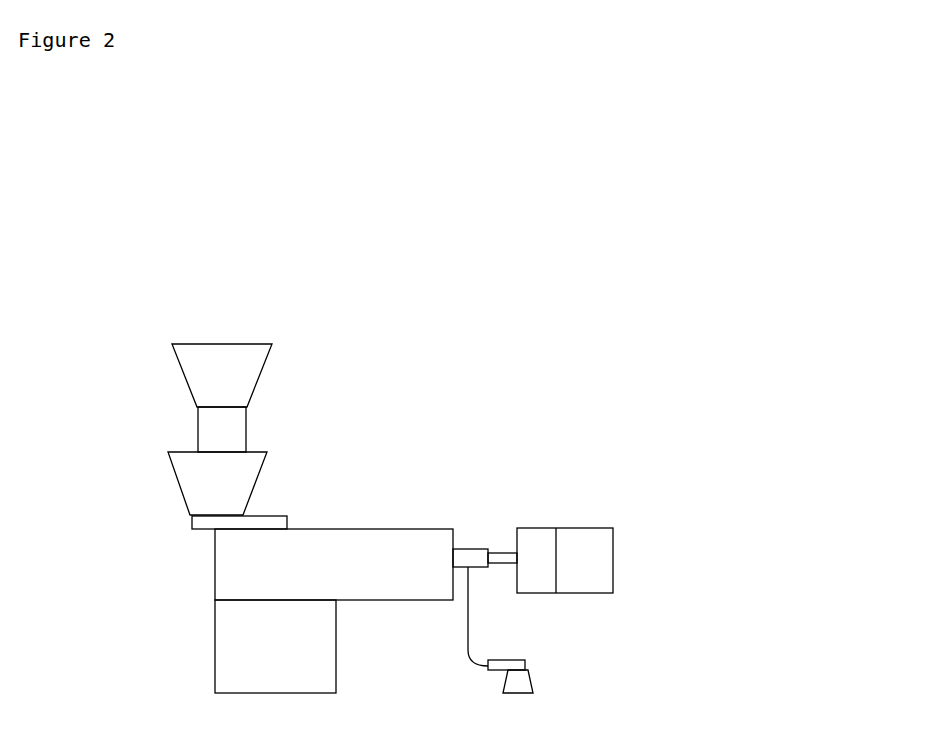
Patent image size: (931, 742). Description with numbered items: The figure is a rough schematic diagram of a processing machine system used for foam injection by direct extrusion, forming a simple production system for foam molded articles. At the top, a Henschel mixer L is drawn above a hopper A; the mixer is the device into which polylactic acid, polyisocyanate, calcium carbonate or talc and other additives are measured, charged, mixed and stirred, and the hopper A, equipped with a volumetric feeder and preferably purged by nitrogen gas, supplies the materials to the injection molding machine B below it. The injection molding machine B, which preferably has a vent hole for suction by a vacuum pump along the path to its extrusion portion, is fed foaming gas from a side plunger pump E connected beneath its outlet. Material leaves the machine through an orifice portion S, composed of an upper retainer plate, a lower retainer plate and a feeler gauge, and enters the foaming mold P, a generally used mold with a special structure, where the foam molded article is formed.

The Henschel mixer L is at (244, 376).
The hopper A is at (237, 488).
The injection molding machine B is at (351, 611).
The orifice portion S is at (503, 550).
The foaming mold P is at (603, 564).
The plunger pump E is at (526, 665).